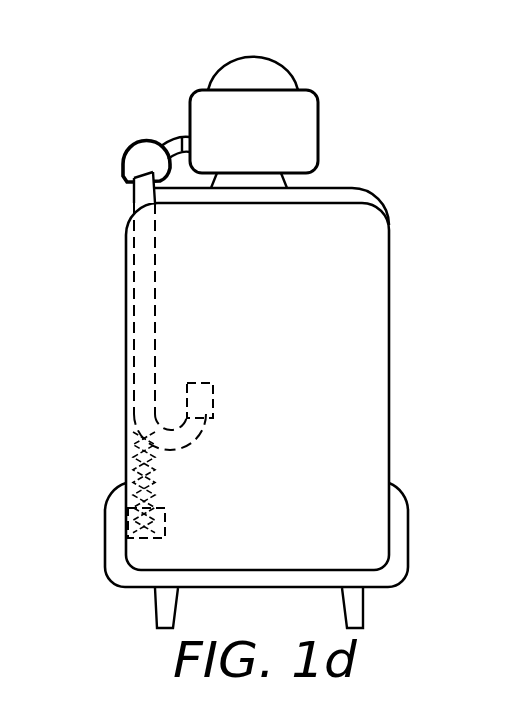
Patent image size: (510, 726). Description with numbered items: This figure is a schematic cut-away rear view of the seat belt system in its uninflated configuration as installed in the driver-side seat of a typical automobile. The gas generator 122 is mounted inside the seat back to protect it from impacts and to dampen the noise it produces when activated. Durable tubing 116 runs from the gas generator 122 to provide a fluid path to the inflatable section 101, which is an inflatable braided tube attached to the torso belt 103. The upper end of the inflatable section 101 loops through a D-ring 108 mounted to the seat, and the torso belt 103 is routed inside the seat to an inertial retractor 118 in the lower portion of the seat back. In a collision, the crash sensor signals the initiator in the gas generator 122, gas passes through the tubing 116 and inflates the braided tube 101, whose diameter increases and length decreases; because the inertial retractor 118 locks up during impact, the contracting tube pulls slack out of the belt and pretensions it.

The D-ring 108 is at (130, 158).
The inflatable section 101 is at (157, 263).
The durable tubing 116 is at (188, 448).
The gas generator 122 is at (215, 398).
The torso belt 103 is at (133, 467).
The inertial retractor 118 is at (167, 522).